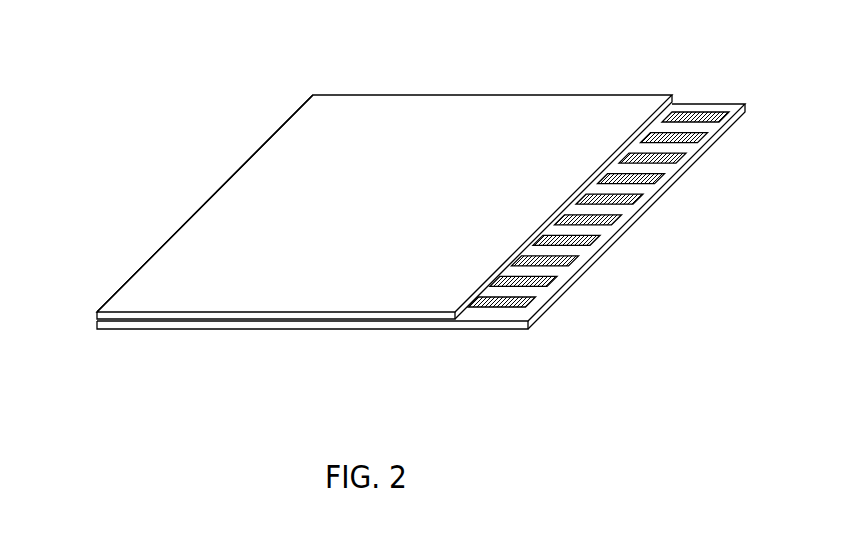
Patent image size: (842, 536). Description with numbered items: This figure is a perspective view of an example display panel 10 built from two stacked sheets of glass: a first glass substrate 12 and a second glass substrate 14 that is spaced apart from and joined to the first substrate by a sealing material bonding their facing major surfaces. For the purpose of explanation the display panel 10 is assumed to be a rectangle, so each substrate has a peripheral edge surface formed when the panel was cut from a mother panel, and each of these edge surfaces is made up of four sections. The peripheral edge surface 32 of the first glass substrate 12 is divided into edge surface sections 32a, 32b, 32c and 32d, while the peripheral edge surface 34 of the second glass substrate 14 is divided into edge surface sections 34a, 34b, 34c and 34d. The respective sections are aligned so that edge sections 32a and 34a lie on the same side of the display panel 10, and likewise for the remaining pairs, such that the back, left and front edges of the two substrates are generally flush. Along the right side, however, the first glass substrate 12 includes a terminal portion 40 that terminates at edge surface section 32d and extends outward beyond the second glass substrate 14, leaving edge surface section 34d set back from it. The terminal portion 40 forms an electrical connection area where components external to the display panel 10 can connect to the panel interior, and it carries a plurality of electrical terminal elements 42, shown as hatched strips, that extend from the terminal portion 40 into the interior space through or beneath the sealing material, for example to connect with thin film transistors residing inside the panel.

The display panel 10 is at (212, 162).
The first glass substrate 12 is at (368, 331).
The second glass substrate 14 is at (503, 104).
The peripheral edge surface 32 is at (409, 328).
The edge surface section 32a is at (397, 96).
The edge surface section 32b is at (196, 212).
The edge surface section 32c is at (163, 327).
The edge surface section 32d is at (693, 165).
The peripheral edge surface 34 is at (256, 325).
The edge surface section 34a is at (384, 168).
The edge surface section 34b is at (205, 203).
The edge surface section 34c is at (126, 316).
The edge surface section 34d is at (678, 110).
The terminal portion 40 is at (454, 340).
The electrical terminal elements 42 is at (540, 296).